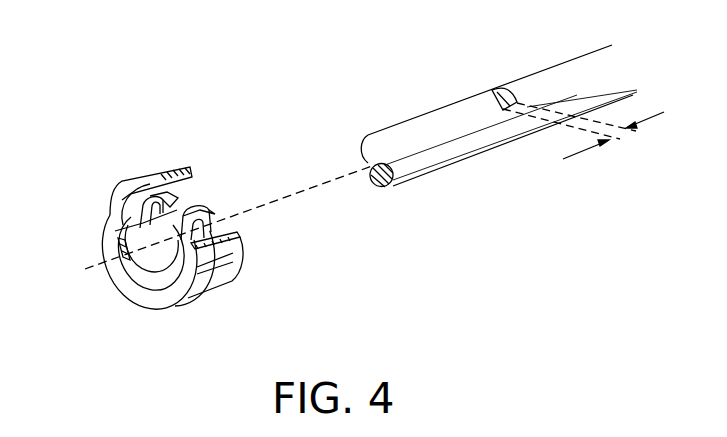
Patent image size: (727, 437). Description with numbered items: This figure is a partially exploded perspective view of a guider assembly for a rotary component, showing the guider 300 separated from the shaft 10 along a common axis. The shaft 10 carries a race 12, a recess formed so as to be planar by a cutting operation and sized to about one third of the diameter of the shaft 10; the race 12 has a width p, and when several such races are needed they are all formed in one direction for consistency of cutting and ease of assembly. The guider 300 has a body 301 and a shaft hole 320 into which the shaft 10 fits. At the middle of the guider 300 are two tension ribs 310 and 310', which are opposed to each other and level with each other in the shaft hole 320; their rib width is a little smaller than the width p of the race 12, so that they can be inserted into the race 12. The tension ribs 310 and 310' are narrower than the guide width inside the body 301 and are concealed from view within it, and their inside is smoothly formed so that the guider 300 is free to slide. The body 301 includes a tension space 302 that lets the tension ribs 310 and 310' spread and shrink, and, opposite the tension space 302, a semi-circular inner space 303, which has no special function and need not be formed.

The shaft 10 is at (448, 147).
The race 12 is at (507, 88).
The width of race p is at (622, 134).
The guider 300 is at (103, 240).
The body 301 is at (222, 283).
The tension space 302 is at (115, 198).
The semi-circular inner space 303 is at (148, 309).
The tension rib 310 is at (165, 172).
The tension rib 310' is at (222, 186).
The shaft hole 320 is at (132, 270).